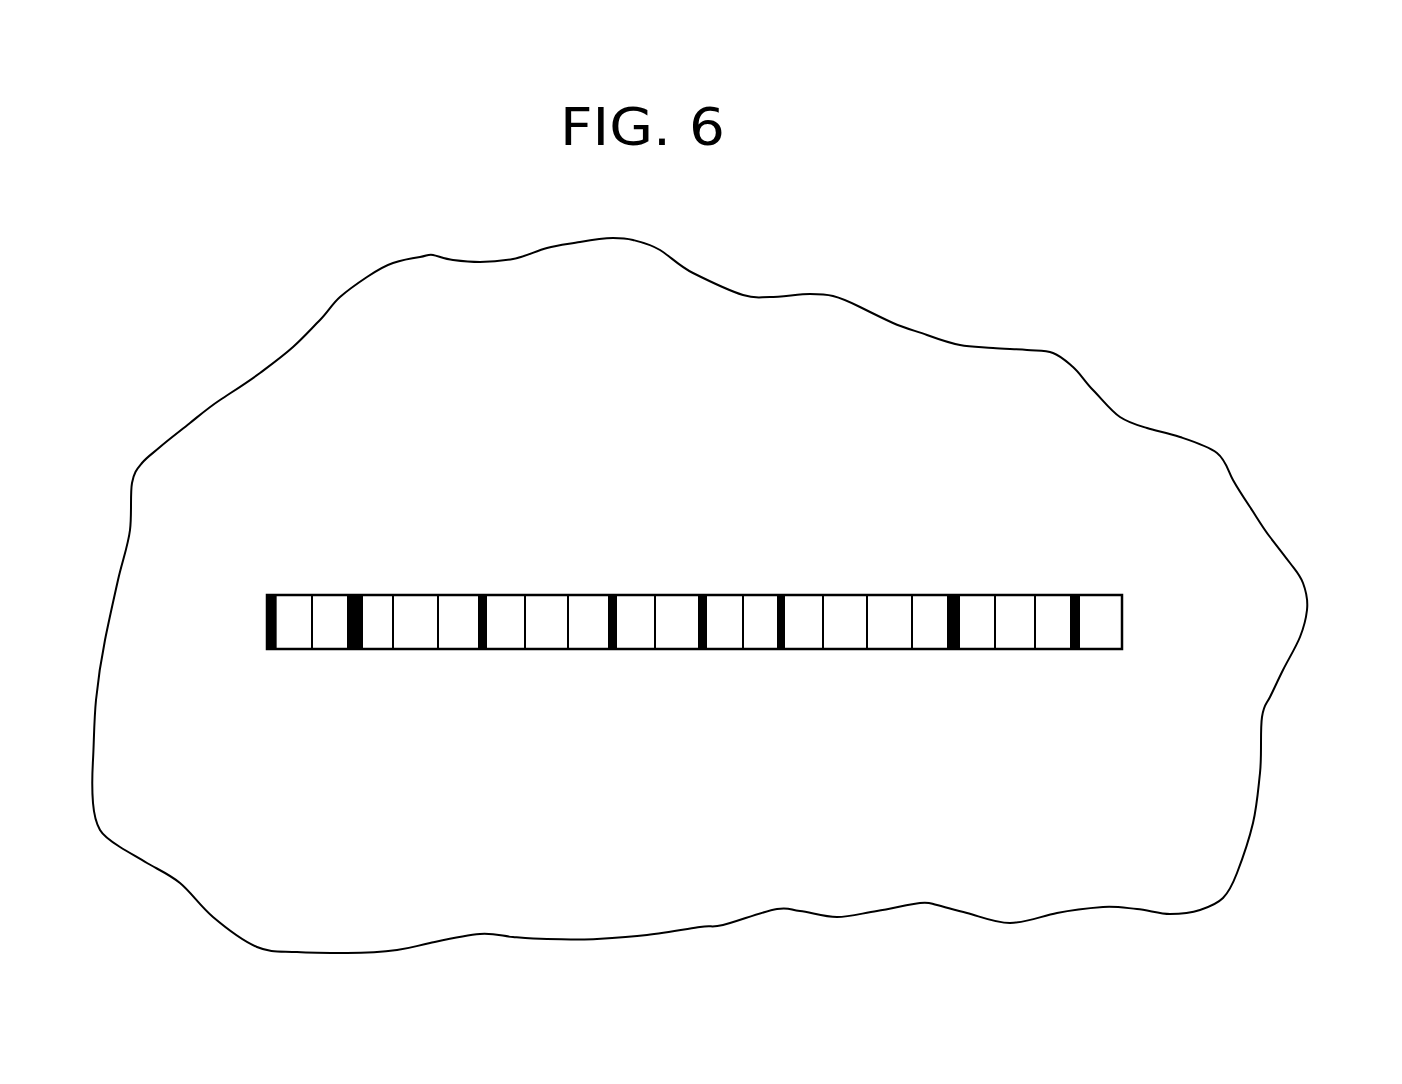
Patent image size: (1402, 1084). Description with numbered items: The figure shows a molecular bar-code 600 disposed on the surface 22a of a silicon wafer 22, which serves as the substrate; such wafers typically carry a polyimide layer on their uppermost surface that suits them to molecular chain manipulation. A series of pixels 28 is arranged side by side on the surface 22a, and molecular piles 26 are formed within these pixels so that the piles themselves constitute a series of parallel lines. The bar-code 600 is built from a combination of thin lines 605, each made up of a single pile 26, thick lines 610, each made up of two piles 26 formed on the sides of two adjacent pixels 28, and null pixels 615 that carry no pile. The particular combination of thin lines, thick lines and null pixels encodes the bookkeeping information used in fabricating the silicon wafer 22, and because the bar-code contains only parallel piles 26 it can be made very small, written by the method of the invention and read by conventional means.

The substrate 22 is at (1107, 350).
The surface 22a is at (1228, 534).
The molecular piles 26 is at (264, 598).
The pixels 28 is at (286, 638).
The molecular bar-code 600 is at (1030, 558).
The thin lines 605 is at (482, 590).
The thick lines 610 is at (359, 663).
The null pixels 615 is at (846, 655).